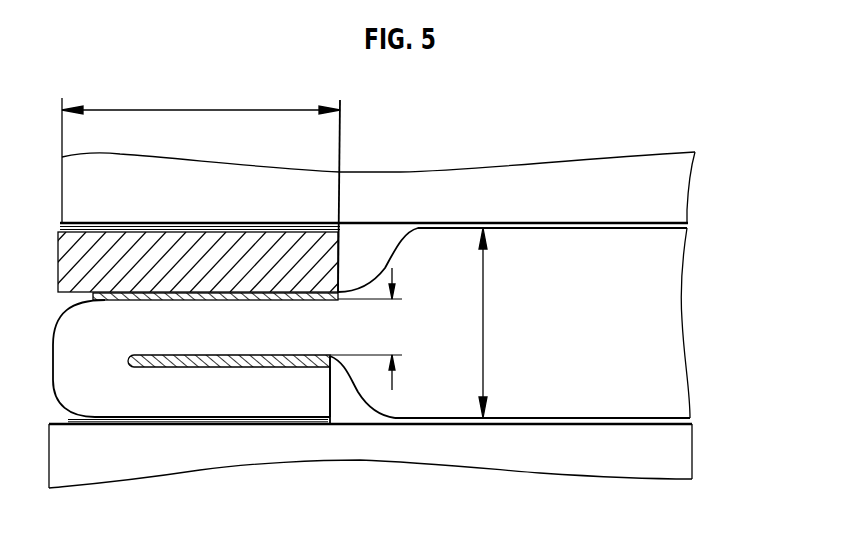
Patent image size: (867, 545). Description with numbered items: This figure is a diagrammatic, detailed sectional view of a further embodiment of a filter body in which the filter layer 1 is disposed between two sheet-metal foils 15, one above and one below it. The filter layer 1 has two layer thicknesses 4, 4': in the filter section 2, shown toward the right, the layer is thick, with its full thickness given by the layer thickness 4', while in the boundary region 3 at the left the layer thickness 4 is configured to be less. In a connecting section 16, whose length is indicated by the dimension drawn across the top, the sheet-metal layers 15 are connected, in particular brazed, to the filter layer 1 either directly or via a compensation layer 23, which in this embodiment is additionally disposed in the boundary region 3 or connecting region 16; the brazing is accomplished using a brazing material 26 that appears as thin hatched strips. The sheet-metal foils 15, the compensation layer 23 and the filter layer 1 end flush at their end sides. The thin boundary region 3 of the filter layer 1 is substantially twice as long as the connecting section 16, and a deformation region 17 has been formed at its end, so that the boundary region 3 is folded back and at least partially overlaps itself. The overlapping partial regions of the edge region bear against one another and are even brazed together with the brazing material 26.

The filter layer 1 is at (660, 310).
The filter section 2 is at (580, 403).
The boundary region 3 is at (282, 397).
The layer thickness 4 is at (383, 329).
The layer thickness 4' is at (508, 323).
The sheet-metal foils 15 is at (668, 188).
The connecting section 16 is at (199, 110).
The deformation region 17 is at (74, 357).
The compensation layer 23 is at (76, 256).
The brazing material 26 is at (92, 298).